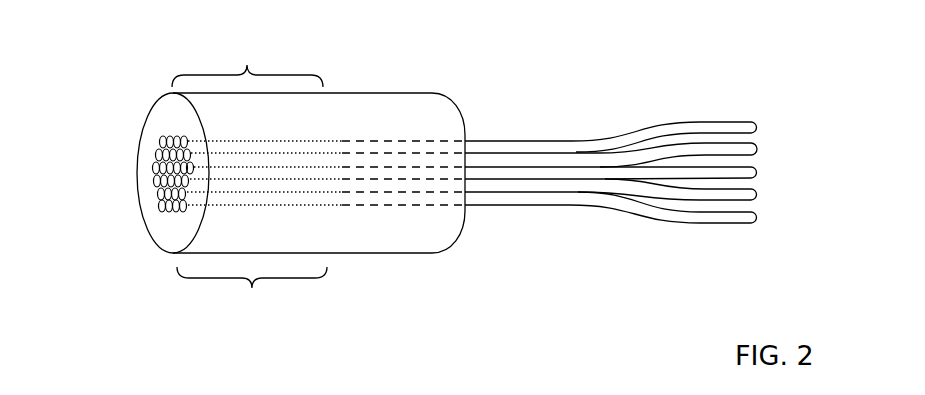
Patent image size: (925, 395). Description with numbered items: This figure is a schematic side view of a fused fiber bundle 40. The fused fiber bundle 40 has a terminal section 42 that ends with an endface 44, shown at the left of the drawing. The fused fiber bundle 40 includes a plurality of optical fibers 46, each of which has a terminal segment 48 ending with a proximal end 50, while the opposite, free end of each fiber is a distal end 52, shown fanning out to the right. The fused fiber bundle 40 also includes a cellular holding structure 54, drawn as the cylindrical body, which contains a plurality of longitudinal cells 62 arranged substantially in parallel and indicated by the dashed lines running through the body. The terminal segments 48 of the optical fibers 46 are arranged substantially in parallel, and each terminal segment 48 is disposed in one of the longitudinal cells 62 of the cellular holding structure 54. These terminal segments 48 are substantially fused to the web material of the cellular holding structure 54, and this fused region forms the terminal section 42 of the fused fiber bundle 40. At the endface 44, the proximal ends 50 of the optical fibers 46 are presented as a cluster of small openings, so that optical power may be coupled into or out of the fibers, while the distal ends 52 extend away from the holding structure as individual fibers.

The fused fiber bundle 40 is at (752, 62).
The terminal section 42 is at (247, 60).
The endface 44 is at (93, 123).
The optical fibers 46 is at (562, 176).
The terminal segment 48 is at (252, 292).
The proximal end 50 is at (167, 200).
The distal end 52 is at (757, 172).
The cellular holding structure 54 is at (412, 235).
The longitudinal cells 62 is at (365, 152).